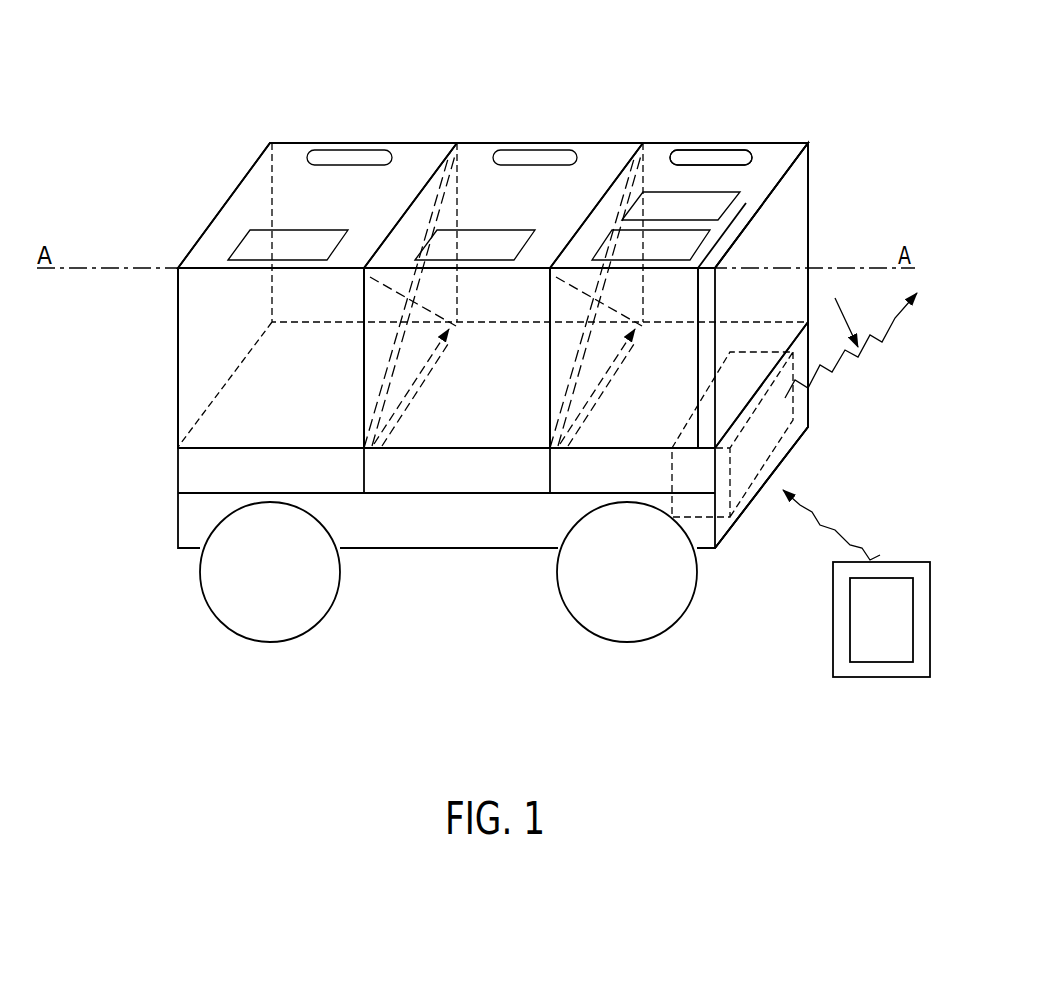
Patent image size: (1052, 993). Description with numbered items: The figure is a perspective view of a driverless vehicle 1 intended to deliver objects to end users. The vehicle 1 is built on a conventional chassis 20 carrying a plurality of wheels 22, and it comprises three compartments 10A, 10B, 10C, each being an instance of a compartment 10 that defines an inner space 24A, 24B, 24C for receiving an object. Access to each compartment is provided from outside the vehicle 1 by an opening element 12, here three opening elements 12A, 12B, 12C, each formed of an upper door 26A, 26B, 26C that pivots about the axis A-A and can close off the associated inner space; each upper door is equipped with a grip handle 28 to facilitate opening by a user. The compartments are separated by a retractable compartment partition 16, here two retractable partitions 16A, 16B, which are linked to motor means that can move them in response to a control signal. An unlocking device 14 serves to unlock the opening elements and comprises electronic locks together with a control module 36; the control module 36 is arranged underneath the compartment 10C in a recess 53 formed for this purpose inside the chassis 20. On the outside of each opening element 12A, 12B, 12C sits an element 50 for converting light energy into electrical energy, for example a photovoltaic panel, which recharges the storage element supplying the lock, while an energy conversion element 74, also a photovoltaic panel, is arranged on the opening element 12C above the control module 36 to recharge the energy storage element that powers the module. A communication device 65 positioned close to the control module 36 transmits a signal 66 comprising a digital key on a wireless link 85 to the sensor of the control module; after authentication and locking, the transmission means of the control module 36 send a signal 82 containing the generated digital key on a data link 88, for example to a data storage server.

The driverless vehicle 1 is at (130, 128).
The compartment 10 is at (237, 418).
The first compartment 10A is at (225, 330).
The second compartment 10B is at (460, 407).
The third compartment 10C is at (780, 233).
The opening element 12 is at (675, 123).
The first opening element 12A is at (263, 187).
The second opening element 12B is at (480, 150).
The third opening element 12C is at (776, 163).
The unlocking device 14 is at (825, 440).
The retractable compartment partition 16 is at (385, 372).
The first retractable partition 16A is at (380, 255).
The second retractable partition 16B is at (566, 255).
The chassis 20 is at (202, 522).
The wheels 22 is at (262, 600).
The inner space of first compartment 24A is at (333, 417).
The inner space of second compartment 24B is at (523, 417).
The inner space of third compartment 24C is at (678, 387).
The first upper door 26A is at (290, 170).
The second upper door 26B is at (597, 175).
The third upper door 26C is at (755, 167).
The grip handle 28 is at (707, 157).
The control module 36 is at (762, 443).
The element for converting light energy into electrical energy 50 is at (308, 258).
The recess 53 is at (793, 403).
The communication device 65 is at (880, 642).
The signal comprising a digital key 66 is at (812, 512).
The energy conversion element 74 is at (692, 219).
The signal containing the generated digital key 82 is at (888, 330).
The wireless link 85 is at (857, 530).
The data link 88 is at (840, 307).